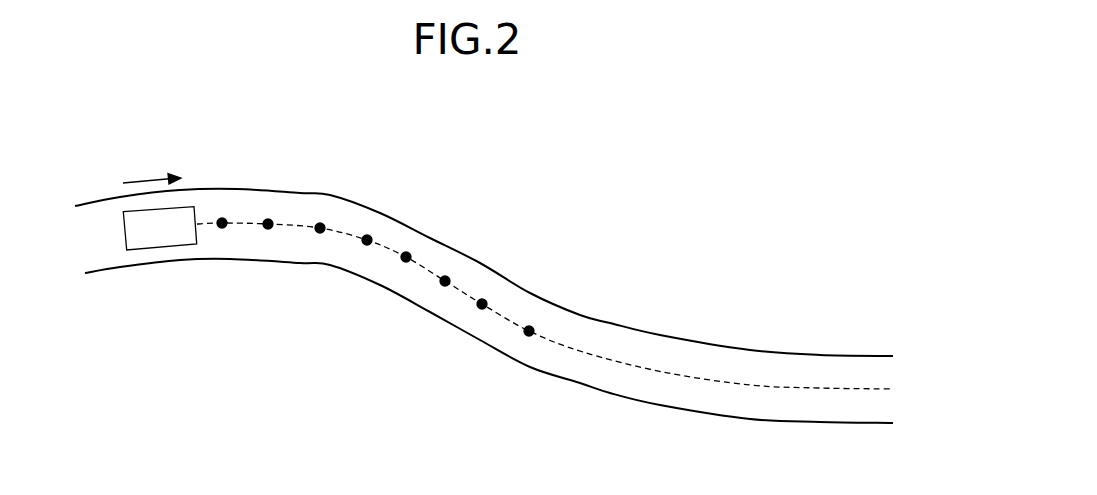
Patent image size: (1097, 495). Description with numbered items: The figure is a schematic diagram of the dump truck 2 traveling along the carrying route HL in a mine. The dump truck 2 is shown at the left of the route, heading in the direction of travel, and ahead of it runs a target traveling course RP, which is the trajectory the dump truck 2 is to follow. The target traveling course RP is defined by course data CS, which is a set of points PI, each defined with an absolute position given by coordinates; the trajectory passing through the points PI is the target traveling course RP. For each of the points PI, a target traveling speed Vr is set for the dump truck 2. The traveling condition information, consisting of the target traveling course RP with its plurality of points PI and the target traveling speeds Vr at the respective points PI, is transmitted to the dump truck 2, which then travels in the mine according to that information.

The dump truck 2 is at (162, 250).
The points PI is at (222, 220).
The target traveling speeds Vr is at (222, 227).
The target traveling course RP is at (467, 288).
The course data CS is at (583, 352).
The carrying route HL is at (663, 353).